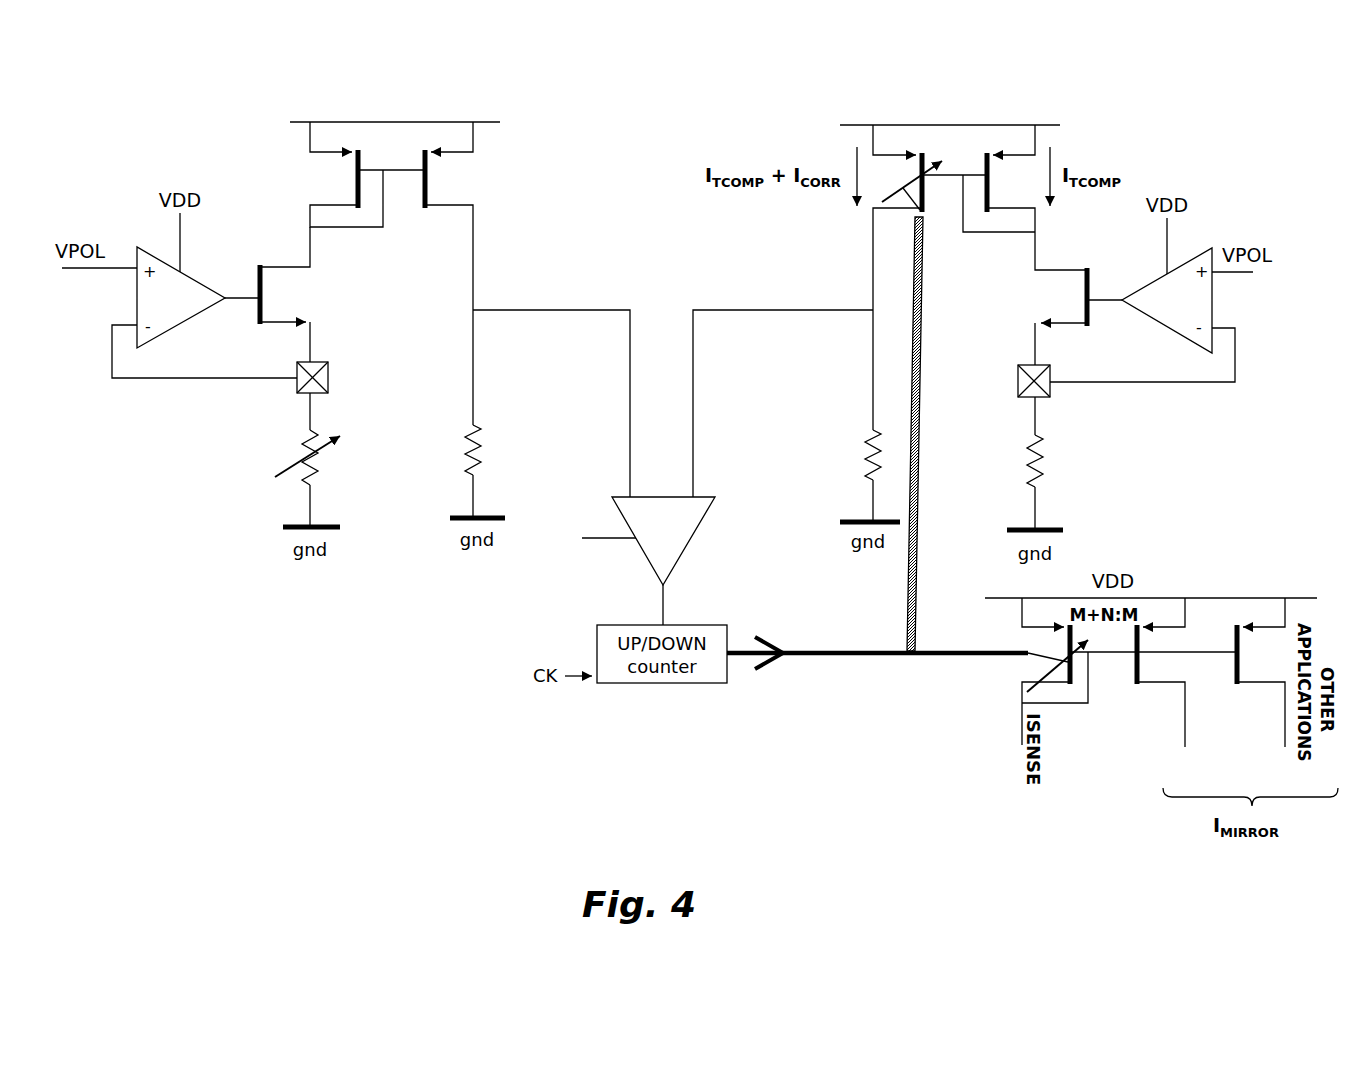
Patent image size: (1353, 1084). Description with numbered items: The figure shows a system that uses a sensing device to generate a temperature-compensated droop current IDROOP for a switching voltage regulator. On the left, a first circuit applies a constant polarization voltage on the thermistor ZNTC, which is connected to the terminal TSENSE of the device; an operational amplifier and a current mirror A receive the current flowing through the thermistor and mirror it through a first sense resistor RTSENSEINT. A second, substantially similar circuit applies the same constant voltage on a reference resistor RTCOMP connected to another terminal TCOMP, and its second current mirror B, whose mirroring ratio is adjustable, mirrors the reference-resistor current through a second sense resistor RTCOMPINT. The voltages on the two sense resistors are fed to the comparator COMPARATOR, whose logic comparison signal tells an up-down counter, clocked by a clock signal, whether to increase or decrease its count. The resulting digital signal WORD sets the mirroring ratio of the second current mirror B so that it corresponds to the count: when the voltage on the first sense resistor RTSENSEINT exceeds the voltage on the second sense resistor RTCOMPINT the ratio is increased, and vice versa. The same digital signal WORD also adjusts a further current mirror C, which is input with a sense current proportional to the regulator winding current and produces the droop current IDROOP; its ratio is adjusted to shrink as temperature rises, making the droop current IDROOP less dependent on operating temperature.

The current mirror A is at (395, 260).
The second current mirror B is at (963, 263).
The current mirror C is at (1129, 671).
The terminal TSENSE is at (359, 377).
The terminal TCOMP is at (995, 381).
The thermistor ZNTC is at (282, 460).
The first sense resistor RTSENSEINT is at (528, 471).
The second sense resistor RTCOMPINT is at (798, 476).
The reference resistor RTCOMP is at (1075, 463).
The comparator COMPARATOR is at (646, 556).
The output signal WORD is at (897, 669).
The droop current IDROOP is at (1172, 690).